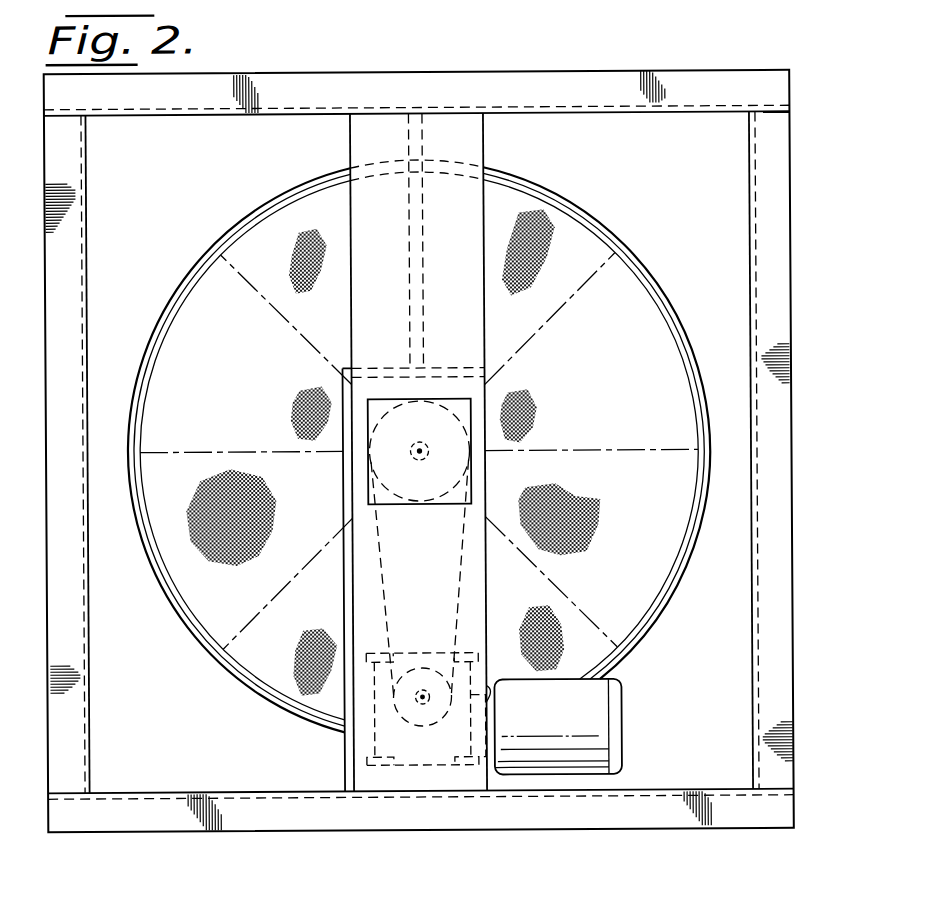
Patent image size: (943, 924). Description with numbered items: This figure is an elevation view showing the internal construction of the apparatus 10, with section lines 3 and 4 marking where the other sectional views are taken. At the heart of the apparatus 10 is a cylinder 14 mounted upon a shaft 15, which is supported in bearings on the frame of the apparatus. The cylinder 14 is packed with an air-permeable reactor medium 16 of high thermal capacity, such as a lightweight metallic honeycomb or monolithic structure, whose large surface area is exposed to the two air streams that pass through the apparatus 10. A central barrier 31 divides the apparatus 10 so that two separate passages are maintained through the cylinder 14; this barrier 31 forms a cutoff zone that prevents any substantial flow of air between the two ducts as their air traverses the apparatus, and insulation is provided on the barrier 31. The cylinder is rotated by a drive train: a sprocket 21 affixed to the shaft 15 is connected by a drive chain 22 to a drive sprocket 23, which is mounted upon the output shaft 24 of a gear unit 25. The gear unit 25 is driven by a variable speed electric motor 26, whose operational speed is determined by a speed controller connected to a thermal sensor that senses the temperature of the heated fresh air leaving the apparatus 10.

The section line 3- 3 is at (450, 49).
The section line 4- 4 is at (262, 485).
The apparatus 10 is at (605, 58).
The cylinder 14 is at (581, 223).
The shaft 15 is at (414, 466).
The reactor medium 16 is at (297, 218).
The sprocket 21 is at (368, 492).
The drive chain 22 is at (392, 576).
The drive sprocket 23 is at (426, 665).
The output shaft 24 is at (418, 707).
The gear unit 25 is at (373, 727).
The variable speed electric motor 26 is at (599, 722).
The central barrier 31 is at (420, 149).